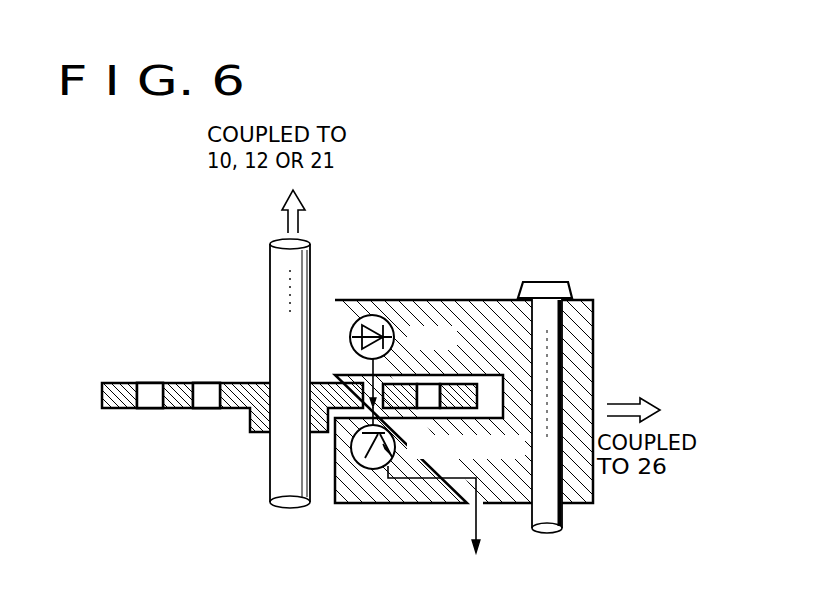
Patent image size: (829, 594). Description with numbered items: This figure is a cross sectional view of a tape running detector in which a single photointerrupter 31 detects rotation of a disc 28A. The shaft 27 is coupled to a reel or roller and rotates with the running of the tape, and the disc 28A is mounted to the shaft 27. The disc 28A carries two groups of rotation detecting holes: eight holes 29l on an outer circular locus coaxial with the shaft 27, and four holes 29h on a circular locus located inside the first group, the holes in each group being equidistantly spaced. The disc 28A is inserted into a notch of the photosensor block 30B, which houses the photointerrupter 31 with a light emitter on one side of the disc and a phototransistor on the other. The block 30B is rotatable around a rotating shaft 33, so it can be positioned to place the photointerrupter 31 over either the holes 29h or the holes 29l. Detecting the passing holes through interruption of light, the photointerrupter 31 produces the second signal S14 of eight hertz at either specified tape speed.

The shaft 27 is at (270, 272).
The disc 28A is at (175, 382).
The holes of the first group 29l is at (150, 405).
The holes of the second group 29h is at (207, 405).
The photosensor block 30B is at (464, 414).
The photointerrupter 31 is at (369, 470).
The rotating shaft 33 is at (549, 281).
The second signal S14 is at (447, 526).